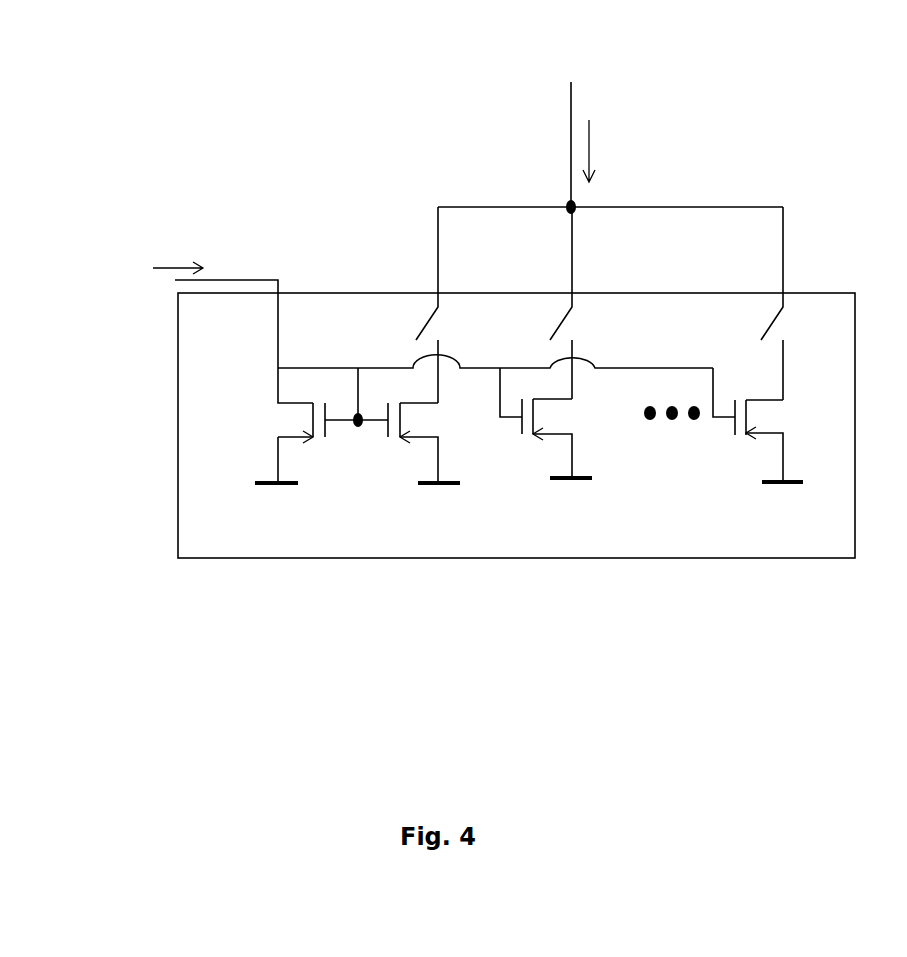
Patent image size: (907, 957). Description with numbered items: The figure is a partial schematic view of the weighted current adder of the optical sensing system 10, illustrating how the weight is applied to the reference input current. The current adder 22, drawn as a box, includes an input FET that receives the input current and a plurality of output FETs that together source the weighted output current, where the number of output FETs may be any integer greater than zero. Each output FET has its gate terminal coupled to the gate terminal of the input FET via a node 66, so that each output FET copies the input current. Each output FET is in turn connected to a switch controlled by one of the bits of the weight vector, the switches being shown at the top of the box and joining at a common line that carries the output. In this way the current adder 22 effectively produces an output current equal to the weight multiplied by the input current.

The optical sensing system 10 is at (146, 98).
The current adder 22 is at (178, 385).
The node 66 is at (360, 427).